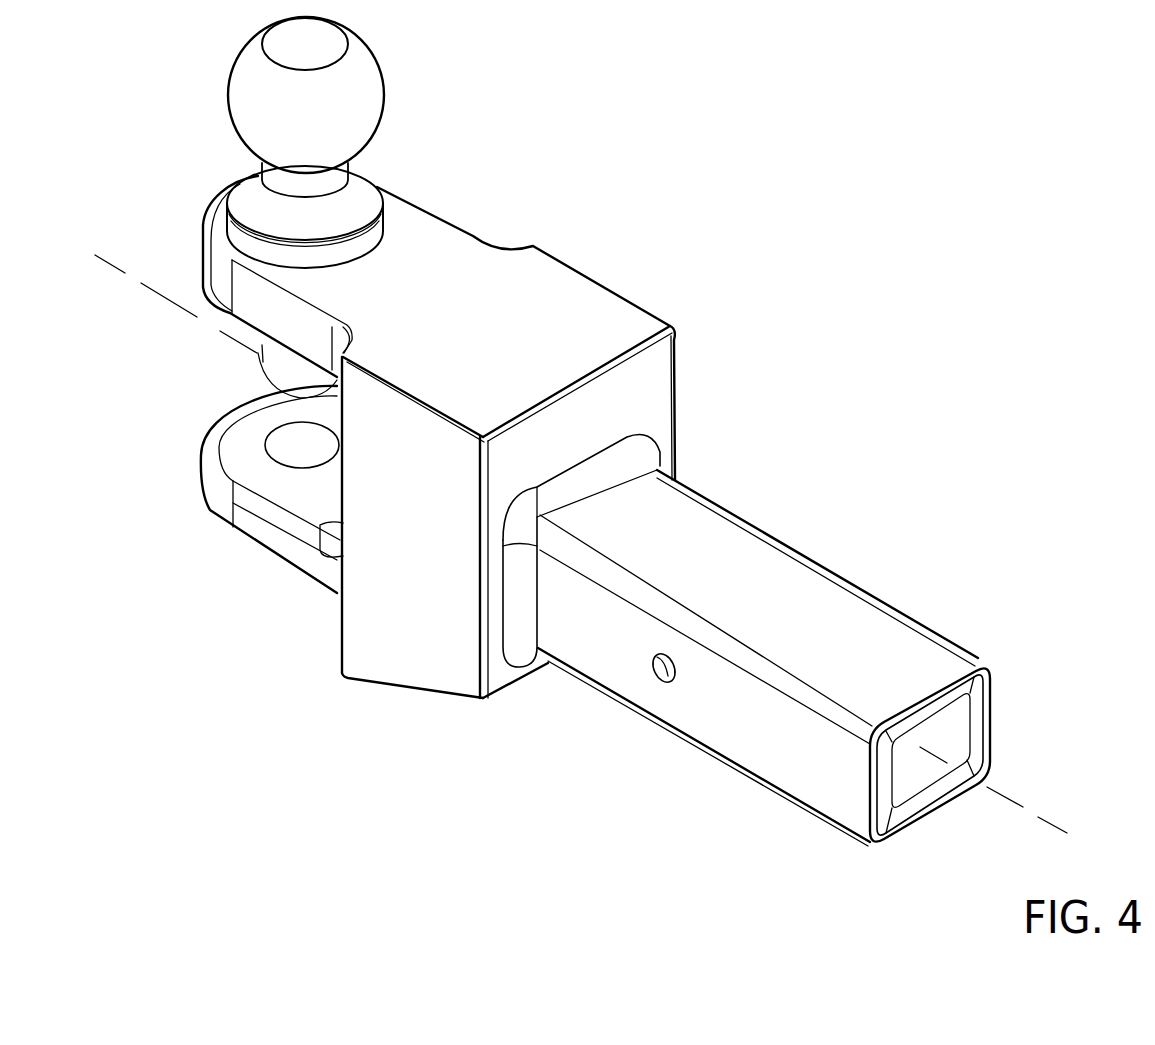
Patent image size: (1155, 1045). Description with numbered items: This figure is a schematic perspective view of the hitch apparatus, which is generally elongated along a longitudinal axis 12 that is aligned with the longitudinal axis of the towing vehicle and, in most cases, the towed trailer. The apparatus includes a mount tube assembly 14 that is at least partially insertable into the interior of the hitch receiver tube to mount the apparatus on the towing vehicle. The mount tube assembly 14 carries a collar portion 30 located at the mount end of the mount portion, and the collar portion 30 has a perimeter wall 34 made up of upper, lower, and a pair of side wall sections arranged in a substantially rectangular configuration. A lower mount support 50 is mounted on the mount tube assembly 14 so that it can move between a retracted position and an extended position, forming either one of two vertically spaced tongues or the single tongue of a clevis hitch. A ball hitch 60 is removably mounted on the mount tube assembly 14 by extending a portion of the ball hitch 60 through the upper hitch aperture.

The longitudinal axis 12 is at (1008, 800).
The mount tube assembly 14 is at (823, 540).
The collar portion 30 is at (559, 476).
The perimeter wall 34 is at (443, 665).
The lower mount support 50 is at (214, 551).
The ball hitch 60 is at (408, 102).